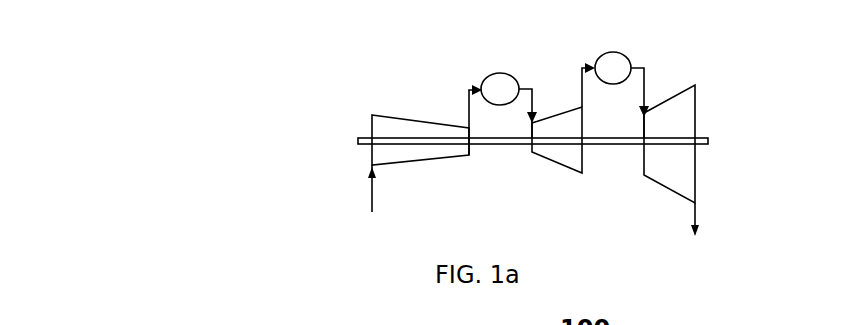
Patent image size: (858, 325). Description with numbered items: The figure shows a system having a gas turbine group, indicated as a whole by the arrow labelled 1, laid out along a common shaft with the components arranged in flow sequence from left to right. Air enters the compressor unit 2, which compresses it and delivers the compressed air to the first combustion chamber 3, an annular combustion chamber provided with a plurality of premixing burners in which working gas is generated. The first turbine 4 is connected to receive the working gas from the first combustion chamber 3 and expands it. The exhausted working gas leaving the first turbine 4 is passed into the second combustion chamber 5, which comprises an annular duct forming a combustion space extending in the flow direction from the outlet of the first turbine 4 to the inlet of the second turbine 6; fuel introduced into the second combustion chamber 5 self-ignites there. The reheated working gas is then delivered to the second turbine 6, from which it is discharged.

The gas turbine plant 1 is at (318, 86).
The compressor unit 2 is at (387, 123).
The first combustion chamber 3 is at (496, 88).
The first turbine 4 is at (558, 122).
The second combustion chamber 5 is at (610, 72).
The second turbine 6 is at (672, 112).